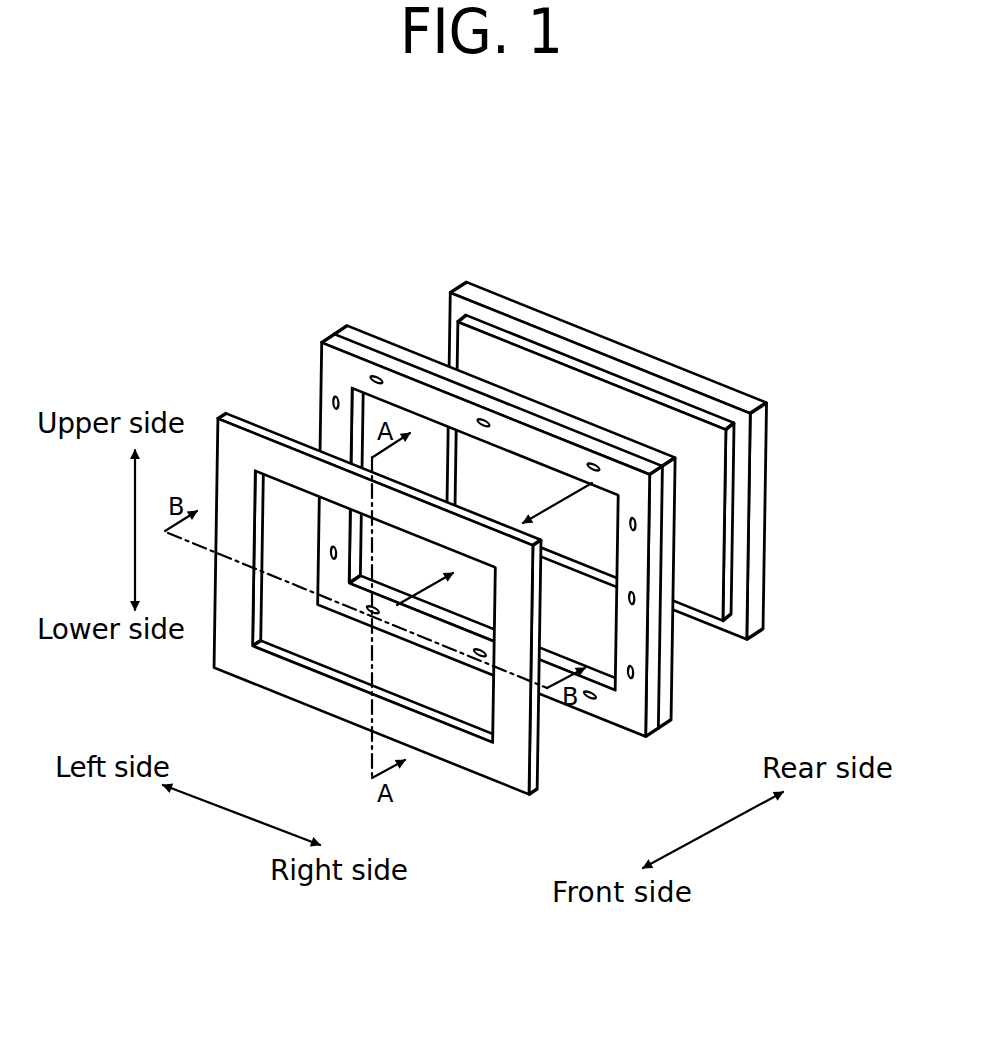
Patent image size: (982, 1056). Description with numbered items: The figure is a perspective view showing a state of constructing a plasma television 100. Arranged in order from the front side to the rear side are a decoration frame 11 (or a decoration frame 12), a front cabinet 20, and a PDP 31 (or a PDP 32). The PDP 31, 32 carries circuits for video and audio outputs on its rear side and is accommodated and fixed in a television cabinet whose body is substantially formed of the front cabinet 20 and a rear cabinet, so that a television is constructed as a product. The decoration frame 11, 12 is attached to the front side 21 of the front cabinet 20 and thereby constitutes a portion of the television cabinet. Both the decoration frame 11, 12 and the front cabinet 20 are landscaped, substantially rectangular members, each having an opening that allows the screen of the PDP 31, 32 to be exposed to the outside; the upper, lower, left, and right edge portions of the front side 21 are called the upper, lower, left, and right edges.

The plasma television 100 is at (513, 505).
The decoration frame 11 is at (507, 768).
The decoration frame 12 is at (377, 640).
The front cabinet 20 is at (513, 565).
The front side 21 is at (635, 720).
The PDP 31 is at (749, 638).
The PDP 32 is at (629, 497).